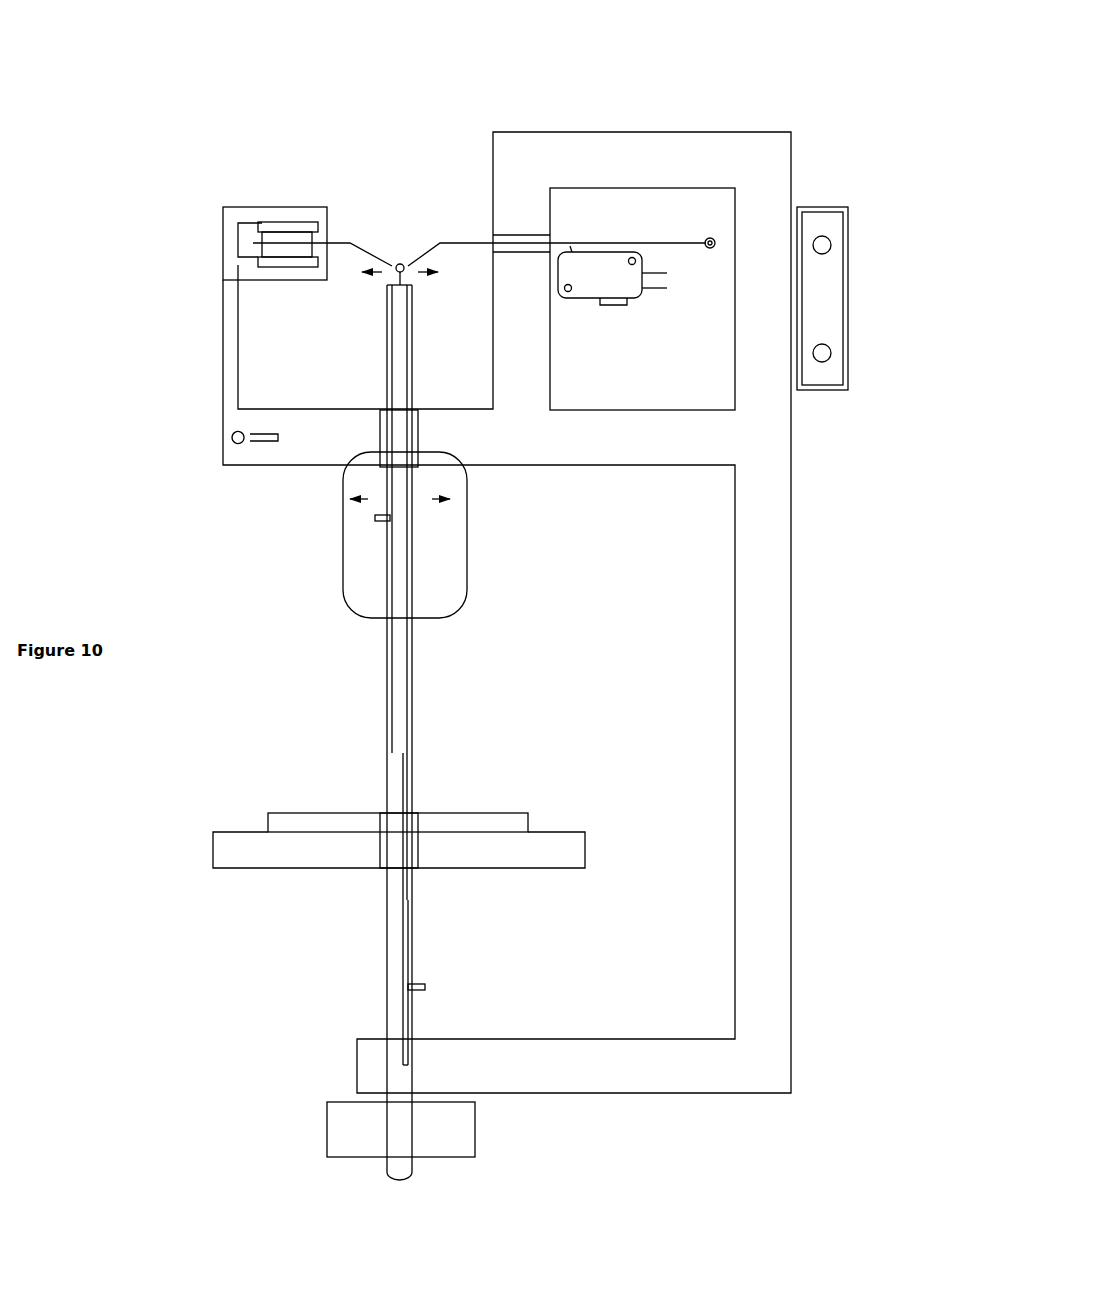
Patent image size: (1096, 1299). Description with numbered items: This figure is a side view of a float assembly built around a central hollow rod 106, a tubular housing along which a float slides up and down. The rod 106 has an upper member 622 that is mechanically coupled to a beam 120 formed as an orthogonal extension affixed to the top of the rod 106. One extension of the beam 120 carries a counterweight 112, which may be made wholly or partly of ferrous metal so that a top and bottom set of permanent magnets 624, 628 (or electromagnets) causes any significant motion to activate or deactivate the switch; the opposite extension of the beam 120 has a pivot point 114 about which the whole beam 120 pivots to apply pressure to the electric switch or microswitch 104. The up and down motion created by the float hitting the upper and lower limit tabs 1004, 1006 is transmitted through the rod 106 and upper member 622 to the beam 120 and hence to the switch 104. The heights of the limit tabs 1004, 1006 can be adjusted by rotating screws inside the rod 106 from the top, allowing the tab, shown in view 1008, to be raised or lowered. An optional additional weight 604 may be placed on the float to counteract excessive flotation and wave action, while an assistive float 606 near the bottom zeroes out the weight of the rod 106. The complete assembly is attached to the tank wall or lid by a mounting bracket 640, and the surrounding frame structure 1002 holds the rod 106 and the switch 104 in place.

The switch 104 is at (624, 314).
The rod 106 is at (425, 723).
The counterweight 112 is at (238, 180).
The pivot point 114 is at (710, 235).
The beam 120 is at (435, 238).
The additional weight 604 is at (390, 810).
The assistive float 606 is at (324, 1132).
The upper member 622 is at (400, 258).
The permanent magnet 624 is at (288, 220).
The permanent magnet 628 is at (255, 250).
The mounting bracket 640 is at (852, 300).
The frame 1002 is at (243, 460).
The upper limit tab 1004 is at (372, 523).
The lower limit tab 1006 is at (437, 983).
The tab view 1008 is at (345, 606).